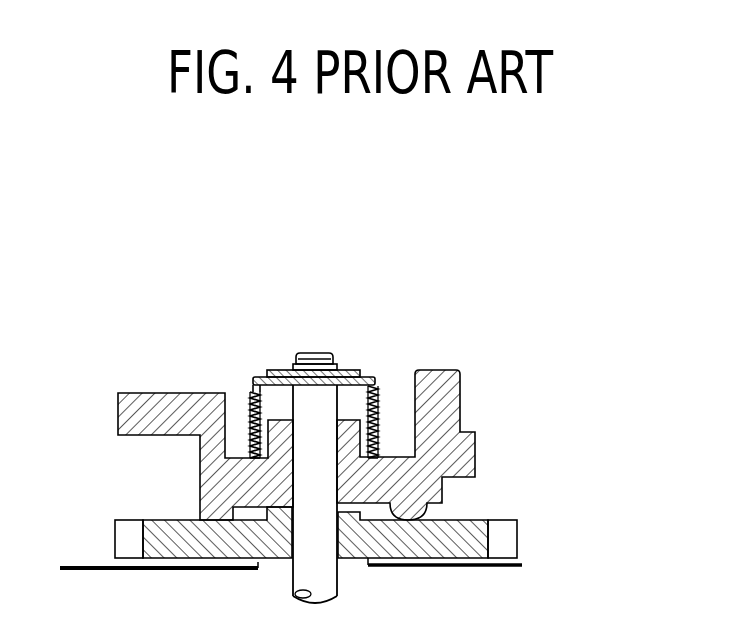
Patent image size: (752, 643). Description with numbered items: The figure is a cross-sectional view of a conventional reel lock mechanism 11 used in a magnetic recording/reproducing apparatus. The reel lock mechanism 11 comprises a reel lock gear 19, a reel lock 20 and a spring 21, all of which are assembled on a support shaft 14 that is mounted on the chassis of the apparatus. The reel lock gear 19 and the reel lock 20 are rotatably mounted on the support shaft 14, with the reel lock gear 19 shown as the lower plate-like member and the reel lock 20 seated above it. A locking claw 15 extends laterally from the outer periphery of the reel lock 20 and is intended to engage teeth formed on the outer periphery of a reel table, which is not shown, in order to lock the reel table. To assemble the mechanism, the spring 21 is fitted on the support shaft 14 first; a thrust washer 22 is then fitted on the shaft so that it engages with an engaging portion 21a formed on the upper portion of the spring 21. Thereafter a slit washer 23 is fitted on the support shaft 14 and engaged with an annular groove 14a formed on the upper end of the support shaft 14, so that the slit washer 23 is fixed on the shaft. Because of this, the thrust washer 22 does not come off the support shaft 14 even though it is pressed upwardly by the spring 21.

The reel lock mechanism 11 is at (221, 206).
The support shaft 14 is at (319, 352).
The annular groove 14a is at (336, 368).
The locking claw 15 is at (118, 408).
The reel lock gear 19 is at (478, 519).
The reel lock 20 is at (464, 368).
The spring 21 is at (247, 402).
The engaging portion 21a is at (393, 382).
The thrust washer 22 is at (252, 380).
The slit washer 23 is at (273, 368).